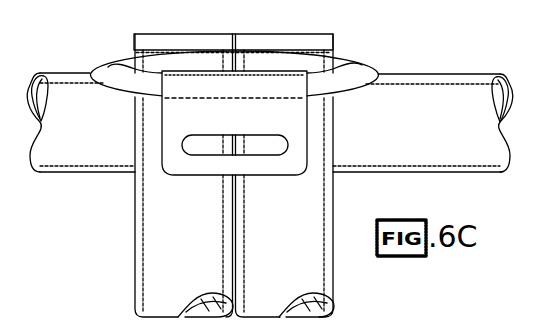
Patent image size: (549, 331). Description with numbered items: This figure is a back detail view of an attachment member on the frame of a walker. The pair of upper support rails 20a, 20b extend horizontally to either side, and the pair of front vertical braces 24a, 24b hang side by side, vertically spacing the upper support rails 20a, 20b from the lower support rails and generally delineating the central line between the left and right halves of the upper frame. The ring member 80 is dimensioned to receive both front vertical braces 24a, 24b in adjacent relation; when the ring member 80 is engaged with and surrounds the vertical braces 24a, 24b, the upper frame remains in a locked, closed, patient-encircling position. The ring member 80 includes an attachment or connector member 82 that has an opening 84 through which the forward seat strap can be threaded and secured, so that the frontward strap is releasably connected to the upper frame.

The ring member 80 is at (355, 63).
The connector member 82 is at (288, 165).
The opening 84 is at (190, 157).
The upper support rail 20a is at (85, 175).
The upper support rail 20b is at (385, 173).
The front vertical brace 24a is at (153, 243).
The front vertical brace 24b is at (303, 262).